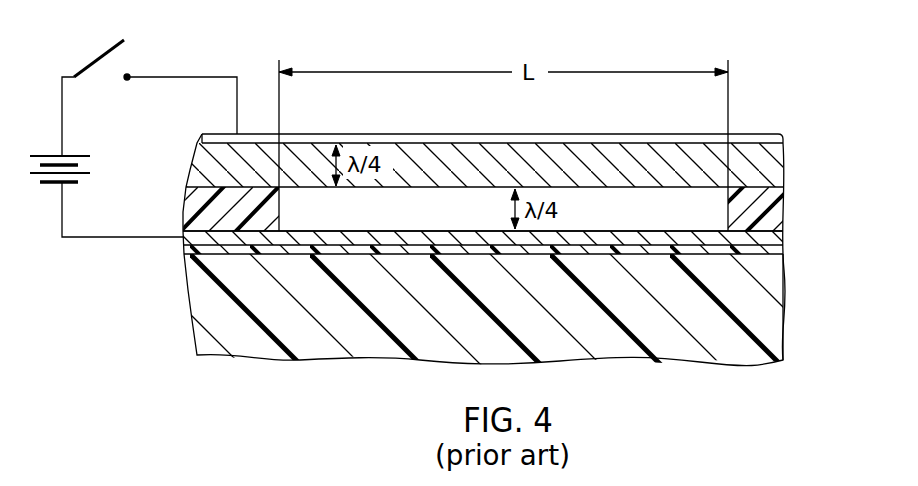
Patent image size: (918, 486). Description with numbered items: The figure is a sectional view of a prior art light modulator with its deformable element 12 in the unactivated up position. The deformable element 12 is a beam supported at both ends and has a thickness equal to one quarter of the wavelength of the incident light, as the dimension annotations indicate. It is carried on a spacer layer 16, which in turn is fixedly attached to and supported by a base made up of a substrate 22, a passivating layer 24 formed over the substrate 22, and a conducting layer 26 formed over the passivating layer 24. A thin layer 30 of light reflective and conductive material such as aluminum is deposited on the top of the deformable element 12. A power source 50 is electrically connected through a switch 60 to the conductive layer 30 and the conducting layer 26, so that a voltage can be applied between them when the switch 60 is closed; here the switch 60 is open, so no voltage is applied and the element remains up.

The switch 60 is at (98, 50).
The power source 50 is at (51, 196).
The thin layer of light reflective and conductive material 30 is at (757, 136).
The deformable element 12 is at (783, 170).
The spacer layer 16 is at (195, 210).
The conducting layer 26 is at (783, 240).
The passivating layer 24 is at (783, 250).
The substrate 22 is at (770, 312).